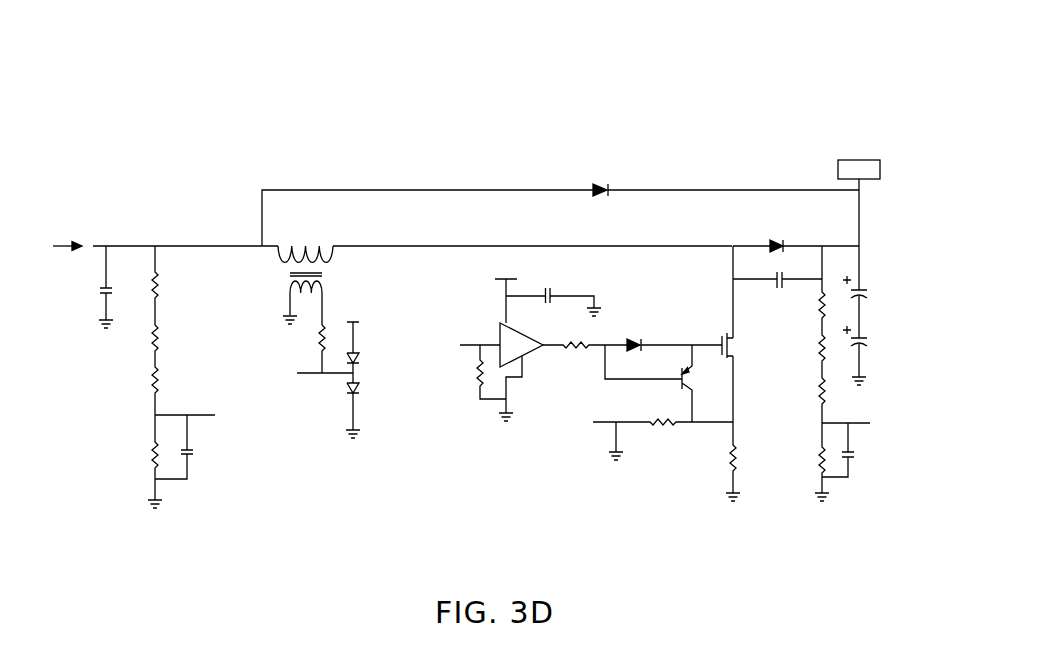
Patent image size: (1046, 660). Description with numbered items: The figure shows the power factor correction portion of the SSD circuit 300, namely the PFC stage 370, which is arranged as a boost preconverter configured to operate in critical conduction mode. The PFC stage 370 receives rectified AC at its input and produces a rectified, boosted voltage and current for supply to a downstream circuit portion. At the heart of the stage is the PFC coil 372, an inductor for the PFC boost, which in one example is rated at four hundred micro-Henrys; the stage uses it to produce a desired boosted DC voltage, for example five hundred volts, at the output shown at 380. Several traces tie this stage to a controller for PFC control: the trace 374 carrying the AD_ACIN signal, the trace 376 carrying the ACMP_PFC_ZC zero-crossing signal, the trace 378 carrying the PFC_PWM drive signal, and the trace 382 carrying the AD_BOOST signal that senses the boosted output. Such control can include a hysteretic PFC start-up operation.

The SSD circuit 300 is at (252, 52).
The power factor correction (PFC) stage 370 is at (176, 164).
The PFC coil 372 is at (300, 253).
The trace (AD_ACIN) 374 is at (215, 416).
The trace (ACMP_PFC_ZC) 376 is at (297, 373).
The trace (PFC_PWM) 378 is at (460, 346).
The boosted voltage output 380 is at (857, 160).
The trace (AD_BOOST) 382 is at (870, 423).